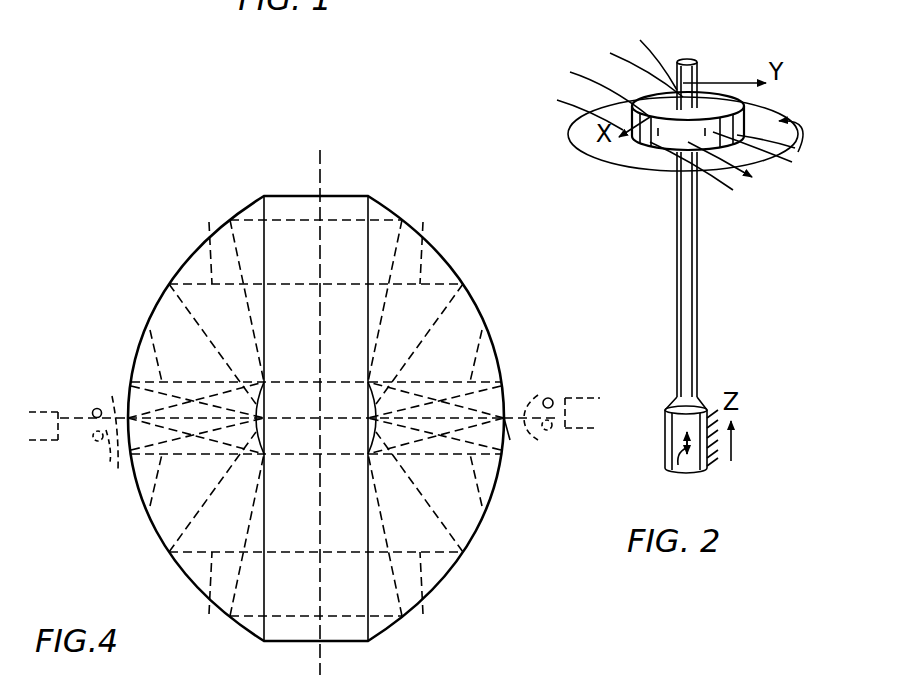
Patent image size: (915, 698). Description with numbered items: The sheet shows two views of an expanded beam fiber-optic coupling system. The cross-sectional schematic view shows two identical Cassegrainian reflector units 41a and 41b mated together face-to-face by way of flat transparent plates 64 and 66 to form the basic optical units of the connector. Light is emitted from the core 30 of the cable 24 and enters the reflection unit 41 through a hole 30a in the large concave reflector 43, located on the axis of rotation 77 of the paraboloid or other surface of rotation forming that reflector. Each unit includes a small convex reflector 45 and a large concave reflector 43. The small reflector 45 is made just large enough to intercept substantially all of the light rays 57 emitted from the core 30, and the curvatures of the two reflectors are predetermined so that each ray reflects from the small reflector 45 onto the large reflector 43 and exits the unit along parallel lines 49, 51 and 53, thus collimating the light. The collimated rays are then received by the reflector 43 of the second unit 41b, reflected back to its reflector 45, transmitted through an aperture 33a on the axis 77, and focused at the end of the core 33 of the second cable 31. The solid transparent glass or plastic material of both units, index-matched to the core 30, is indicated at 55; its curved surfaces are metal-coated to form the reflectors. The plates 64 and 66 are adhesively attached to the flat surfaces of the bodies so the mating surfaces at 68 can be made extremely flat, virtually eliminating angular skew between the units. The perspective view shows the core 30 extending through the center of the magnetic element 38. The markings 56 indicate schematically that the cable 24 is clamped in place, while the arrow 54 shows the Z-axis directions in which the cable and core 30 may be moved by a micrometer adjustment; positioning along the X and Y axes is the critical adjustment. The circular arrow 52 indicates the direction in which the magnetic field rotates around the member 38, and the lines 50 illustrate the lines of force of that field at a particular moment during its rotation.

In FIG. 4, the cable 24 is at (33, 410).
In FIG. 2, the cable 24 is at (665, 420).
In FIG. 4, the core 30 is at (98, 408).
In FIG. 2, the core 30 is at (692, 76).
In FIG. 4, the hole 30a is at (120, 468).
In FIG. 4, the second cable 31 is at (601, 398).
In FIG. 4, the core 33 is at (556, 398).
In FIG. 4, the aperture 33a is at (532, 429).
In FIG. 4, the magnetic element 38 is at (95, 442).
In FIG. 2, the magnetic element 38 is at (655, 153).
In FIG. 4, the reflection unit 41 is at (530, 278).
In FIG. 4, the Cassegrainian reflector unit 41a is at (249, 631).
In FIG. 4, the Cassegrainian reflector unit 41b is at (405, 644).
In FIG. 4, the large concave reflector 43 is at (181, 270).
In FIG. 4, the small convex reflector 45 is at (249, 404).
In FIG. 4, the parallel line 49 is at (206, 235).
In FIG. 2, the lines of force 50 is at (557, 56).
In FIG. 4, the parallel line 51 is at (397, 215).
In FIG. 2, the circular arrow 52 is at (801, 120).
In FIG. 4, the parallel line 53 is at (149, 333).
In FIG. 2, the arrow 54 is at (681, 466).
In FIG. 4, the solid material 55 is at (201, 315).
In FIG. 2, the markings 56 is at (714, 464).
In FIG. 4, the light rays 57 is at (135, 367).
In FIG. 4, the flat transparent plate 64 is at (300, 196).
In FIG. 4, the flat transparent plate 66 is at (352, 206).
In FIG. 4, the mating surfaces 68 is at (323, 181).
In FIG. 4, the axis of rotation 77 is at (305, 418).